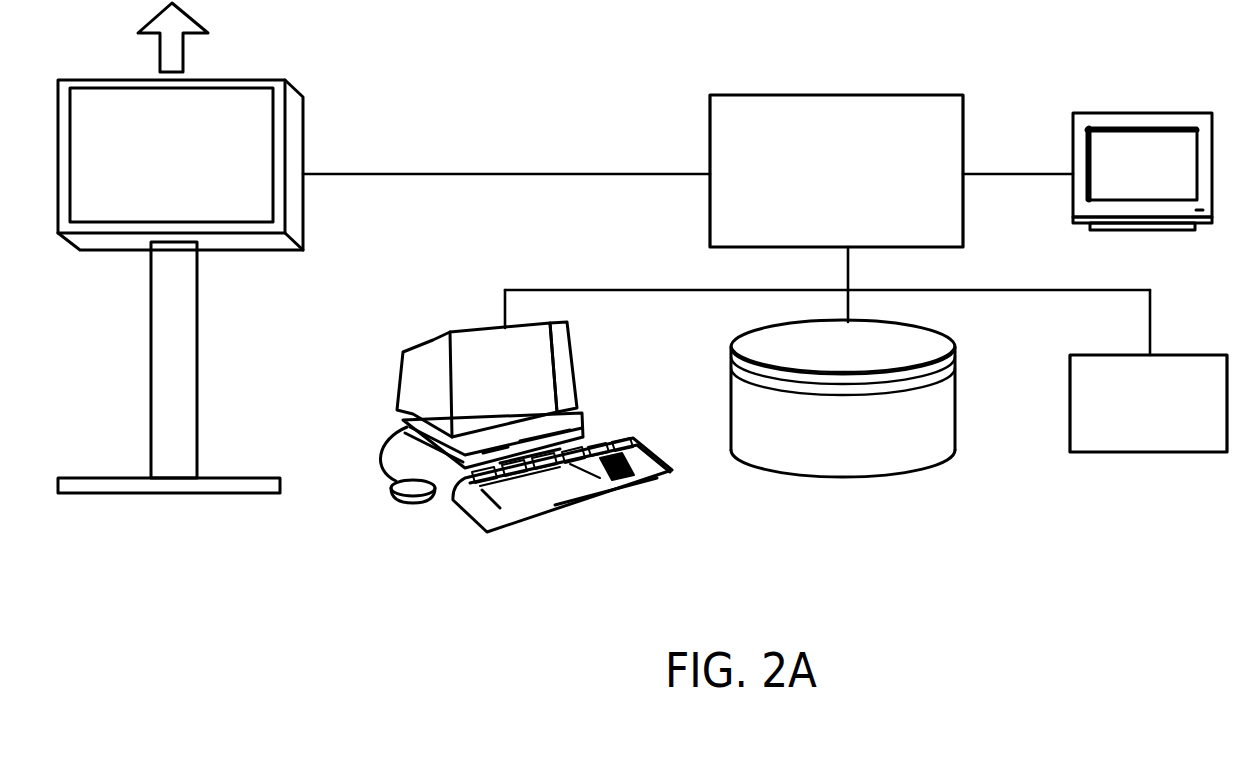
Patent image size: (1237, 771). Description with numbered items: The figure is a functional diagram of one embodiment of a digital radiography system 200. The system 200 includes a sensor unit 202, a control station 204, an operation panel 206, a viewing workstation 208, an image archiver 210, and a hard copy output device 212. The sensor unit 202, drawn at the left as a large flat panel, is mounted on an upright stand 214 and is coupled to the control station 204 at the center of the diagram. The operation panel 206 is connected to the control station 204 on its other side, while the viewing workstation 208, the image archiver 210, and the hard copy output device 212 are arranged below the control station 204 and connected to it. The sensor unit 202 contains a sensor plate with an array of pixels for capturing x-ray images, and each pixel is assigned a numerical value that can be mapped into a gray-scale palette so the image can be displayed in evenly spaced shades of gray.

The digital radiography system 200 is at (735, 602).
The sensor unit 202 is at (293, 90).
The control station 204 is at (710, 95).
The operation panel 206 is at (1140, 113).
The viewing workstation 208 is at (400, 373).
The image archiver 210 is at (955, 405).
The hard copy output device 212 is at (1148, 452).
The upright stand 214 is at (197, 397).